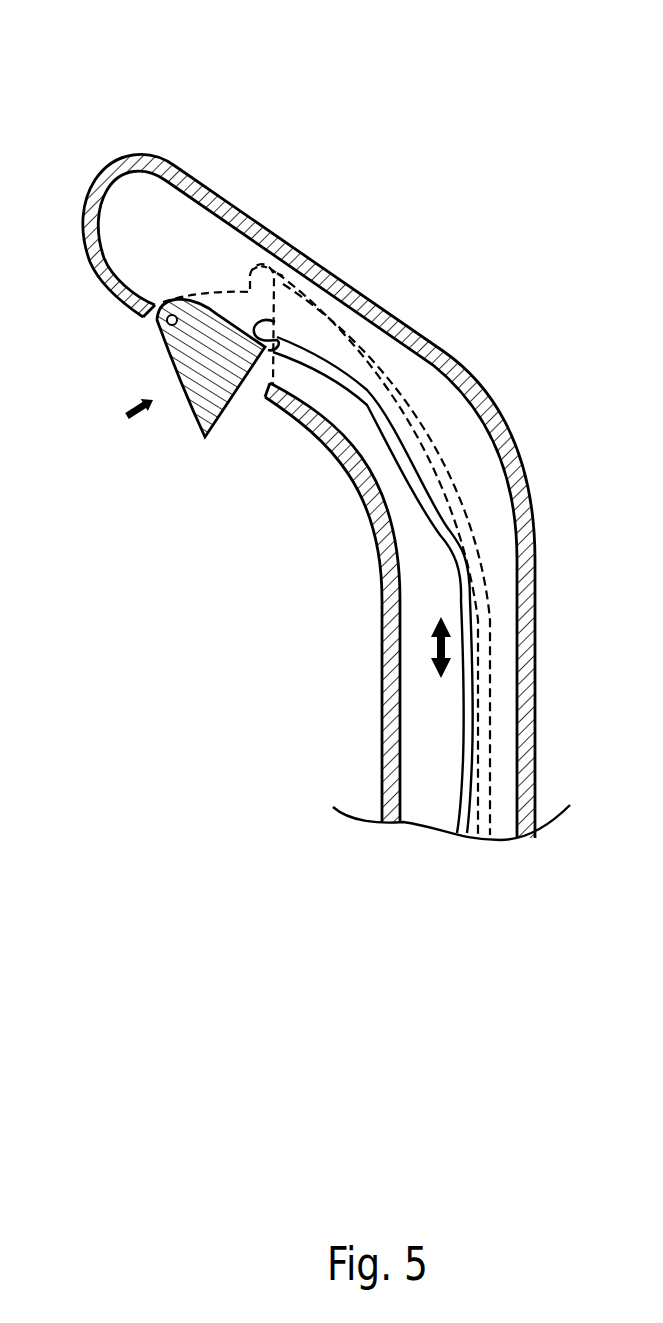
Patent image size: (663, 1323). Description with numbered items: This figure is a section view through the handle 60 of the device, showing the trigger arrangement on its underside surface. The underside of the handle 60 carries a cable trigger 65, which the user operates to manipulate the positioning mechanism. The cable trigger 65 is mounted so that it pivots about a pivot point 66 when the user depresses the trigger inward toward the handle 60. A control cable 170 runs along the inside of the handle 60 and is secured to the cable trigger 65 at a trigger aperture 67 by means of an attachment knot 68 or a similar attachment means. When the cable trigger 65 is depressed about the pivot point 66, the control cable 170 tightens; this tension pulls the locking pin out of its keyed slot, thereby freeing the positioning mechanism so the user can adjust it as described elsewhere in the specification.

The handle 60 is at (202, 186).
The cable trigger 65 is at (208, 400).
The pivot point 66 is at (165, 323).
The trigger aperture 67 is at (267, 347).
The attachment knot 68 is at (274, 330).
The control cable 170 is at (382, 423).